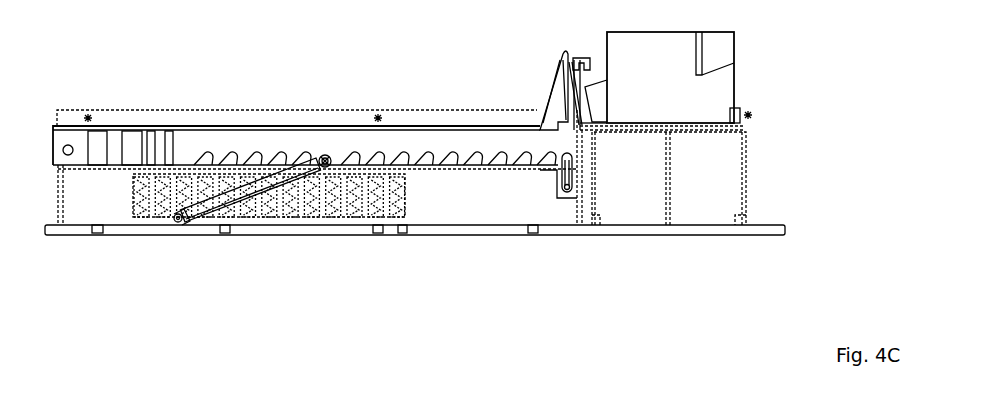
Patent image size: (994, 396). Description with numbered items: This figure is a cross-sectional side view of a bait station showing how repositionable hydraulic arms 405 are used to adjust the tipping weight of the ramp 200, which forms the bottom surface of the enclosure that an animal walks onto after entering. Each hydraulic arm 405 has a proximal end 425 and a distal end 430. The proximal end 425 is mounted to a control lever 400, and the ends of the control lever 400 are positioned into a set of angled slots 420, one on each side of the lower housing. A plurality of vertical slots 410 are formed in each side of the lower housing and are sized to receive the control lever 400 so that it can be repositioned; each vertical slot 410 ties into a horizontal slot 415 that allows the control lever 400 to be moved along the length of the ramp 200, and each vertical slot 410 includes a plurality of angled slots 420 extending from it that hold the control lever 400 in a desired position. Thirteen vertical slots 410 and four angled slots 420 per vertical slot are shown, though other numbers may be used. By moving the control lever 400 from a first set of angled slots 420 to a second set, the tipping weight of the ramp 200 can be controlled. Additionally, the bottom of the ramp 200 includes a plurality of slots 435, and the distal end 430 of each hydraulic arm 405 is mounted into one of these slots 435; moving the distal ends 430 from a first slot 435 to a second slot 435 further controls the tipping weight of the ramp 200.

The ramp 200 is at (172, 120).
The control lever 400 is at (176, 221).
The hydraulic arms 405 is at (232, 197).
The vertical slots 410 is at (400, 202).
The horizontal slot 415 is at (150, 175).
The angled slots 420 is at (350, 213).
The proximal end 425 is at (188, 221).
The distal end 430 is at (321, 157).
The slots 435 is at (450, 163).